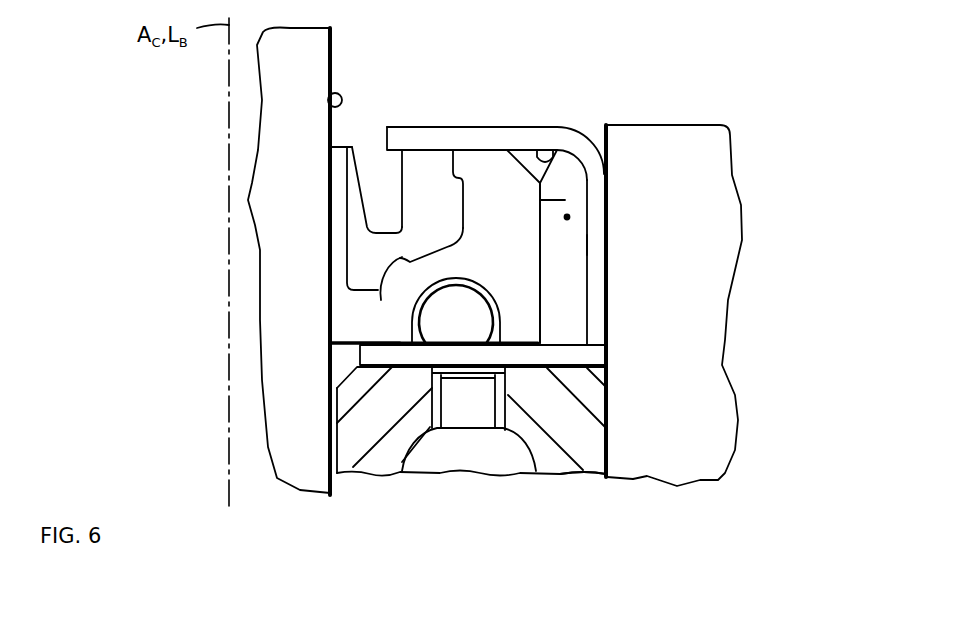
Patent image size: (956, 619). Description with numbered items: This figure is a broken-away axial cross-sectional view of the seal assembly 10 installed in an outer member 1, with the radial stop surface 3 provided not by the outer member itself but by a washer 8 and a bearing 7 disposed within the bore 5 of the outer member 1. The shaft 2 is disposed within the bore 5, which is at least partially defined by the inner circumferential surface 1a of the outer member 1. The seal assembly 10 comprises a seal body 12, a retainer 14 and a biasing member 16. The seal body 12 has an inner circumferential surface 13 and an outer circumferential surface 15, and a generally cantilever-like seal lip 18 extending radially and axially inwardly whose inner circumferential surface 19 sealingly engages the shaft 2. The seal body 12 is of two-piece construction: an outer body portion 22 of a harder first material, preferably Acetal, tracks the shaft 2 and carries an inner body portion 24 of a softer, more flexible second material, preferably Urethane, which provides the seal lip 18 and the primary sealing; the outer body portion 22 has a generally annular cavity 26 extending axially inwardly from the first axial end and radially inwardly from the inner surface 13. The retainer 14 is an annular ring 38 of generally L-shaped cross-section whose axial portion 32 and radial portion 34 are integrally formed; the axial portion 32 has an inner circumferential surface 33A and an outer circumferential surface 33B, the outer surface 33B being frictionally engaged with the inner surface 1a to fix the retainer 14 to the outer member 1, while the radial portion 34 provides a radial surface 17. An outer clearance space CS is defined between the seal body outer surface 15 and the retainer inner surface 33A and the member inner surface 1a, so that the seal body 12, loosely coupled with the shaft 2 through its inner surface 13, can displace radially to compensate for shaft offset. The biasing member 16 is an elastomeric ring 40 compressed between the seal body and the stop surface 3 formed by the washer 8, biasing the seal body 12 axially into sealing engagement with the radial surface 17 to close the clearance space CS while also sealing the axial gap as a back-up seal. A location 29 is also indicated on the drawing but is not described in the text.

The outer member 1 is at (688, 305).
The inner circumferential surface of the outer member 1a is at (606, 440).
The shaft 2 is at (340, 45).
The radial stop surface 3 is at (558, 338).
The bore 5 is at (582, 486).
The bearing 7 is at (502, 437).
The washer 8 is at (590, 352).
The seal assembly 10 is at (541, 177).
The seal body 12 is at (316, 257).
The inner circumferential surface of the seal body 13 is at (333, 322).
The retainer 14 is at (541, 177).
The outer circumferential surface of the seal body 15 is at (565, 200).
The biasing member 16 is at (506, 315).
The radial surface of the retainer 17 is at (553, 152).
The seal lip 18 is at (347, 193).
The inner circumferential surface of the seal lip 19 is at (331, 147).
The outer body portion 22 is at (334, 302).
The inner body portion 24 is at (422, 158).
The annular cavity 26 is at (383, 293).
The abutment point 29 is at (328, 101).
The axial portion of the retainer 32 is at (605, 265).
The inner circumferential surface of the retainer axial portion 33A is at (583, 254).
The outer circumferential surface of the retainer axial portion 33B is at (607, 306).
The radial portion of the retainer 34 is at (518, 125).
The annular ring 38 is at (450, 123).
The elastomeric ring 40 is at (466, 303).
The outer clearance space CS is at (567, 217).